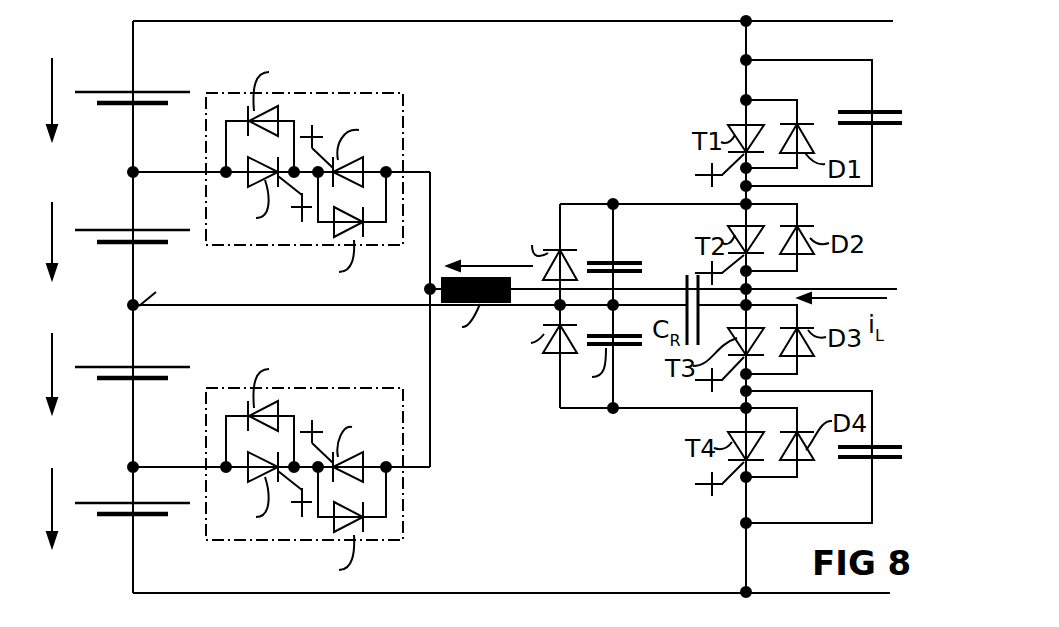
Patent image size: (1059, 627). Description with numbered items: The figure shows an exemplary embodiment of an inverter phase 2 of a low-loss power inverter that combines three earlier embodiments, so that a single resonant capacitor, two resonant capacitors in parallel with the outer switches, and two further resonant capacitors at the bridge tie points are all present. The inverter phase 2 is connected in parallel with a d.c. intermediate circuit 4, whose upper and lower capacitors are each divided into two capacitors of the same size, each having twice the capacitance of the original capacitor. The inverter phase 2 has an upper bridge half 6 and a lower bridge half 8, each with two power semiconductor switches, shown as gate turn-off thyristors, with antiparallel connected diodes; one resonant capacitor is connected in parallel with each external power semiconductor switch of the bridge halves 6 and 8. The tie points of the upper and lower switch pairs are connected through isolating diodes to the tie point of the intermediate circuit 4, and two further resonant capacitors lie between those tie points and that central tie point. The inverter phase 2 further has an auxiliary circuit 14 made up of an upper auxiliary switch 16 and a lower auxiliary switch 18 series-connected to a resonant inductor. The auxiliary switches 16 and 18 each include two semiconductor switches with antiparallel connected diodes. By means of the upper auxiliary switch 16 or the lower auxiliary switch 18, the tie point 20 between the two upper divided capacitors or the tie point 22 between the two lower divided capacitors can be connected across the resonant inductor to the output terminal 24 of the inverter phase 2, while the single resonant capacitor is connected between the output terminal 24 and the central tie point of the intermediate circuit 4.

The inverter phase 2 is at (616, 482).
The d.c. intermediate circuit 4 is at (133, 266).
The upper bridge half 6 is at (897, 186).
The lower bridge half 8 is at (898, 524).
The auxiliary circuit 14 is at (390, 357).
The upper auxiliary switch 16 is at (404, 103).
The lower auxiliary switch 18 is at (331, 471).
The tie point 20 is at (137, 170).
The tie point 22 is at (137, 465).
The output terminal 24 is at (752, 288).